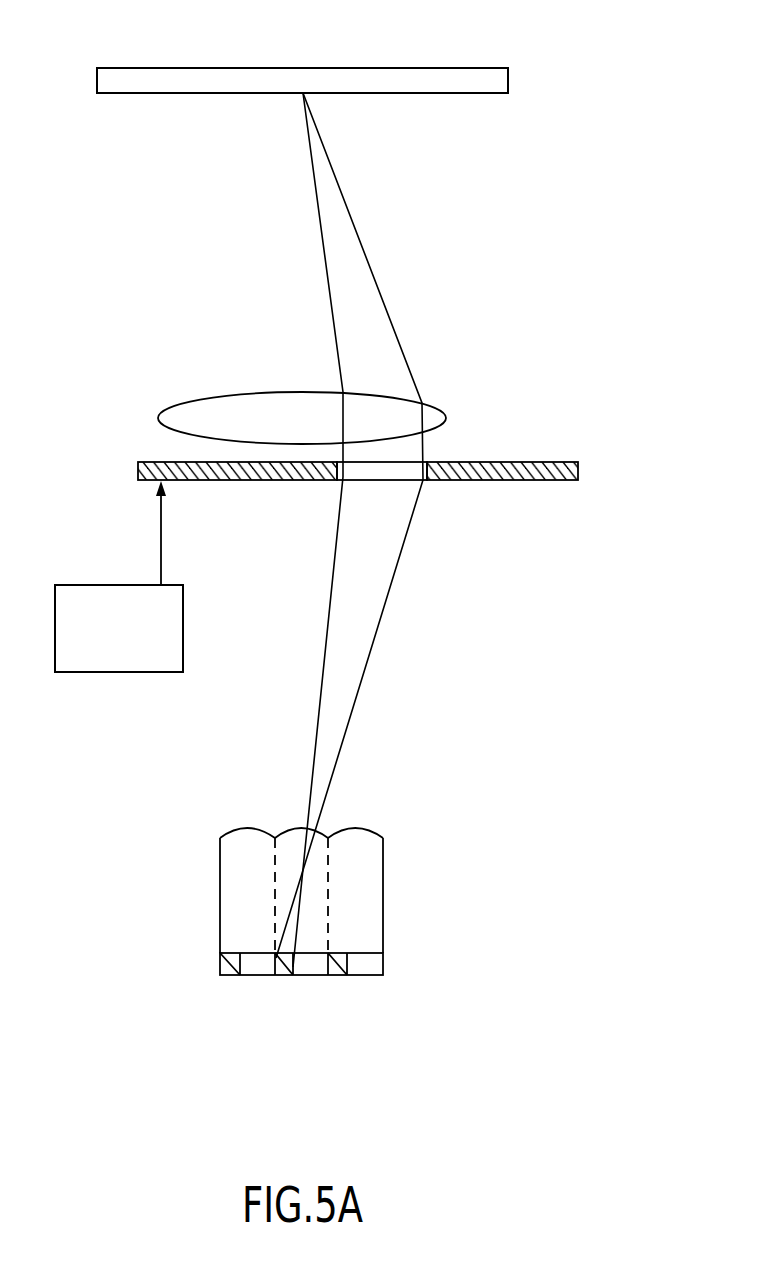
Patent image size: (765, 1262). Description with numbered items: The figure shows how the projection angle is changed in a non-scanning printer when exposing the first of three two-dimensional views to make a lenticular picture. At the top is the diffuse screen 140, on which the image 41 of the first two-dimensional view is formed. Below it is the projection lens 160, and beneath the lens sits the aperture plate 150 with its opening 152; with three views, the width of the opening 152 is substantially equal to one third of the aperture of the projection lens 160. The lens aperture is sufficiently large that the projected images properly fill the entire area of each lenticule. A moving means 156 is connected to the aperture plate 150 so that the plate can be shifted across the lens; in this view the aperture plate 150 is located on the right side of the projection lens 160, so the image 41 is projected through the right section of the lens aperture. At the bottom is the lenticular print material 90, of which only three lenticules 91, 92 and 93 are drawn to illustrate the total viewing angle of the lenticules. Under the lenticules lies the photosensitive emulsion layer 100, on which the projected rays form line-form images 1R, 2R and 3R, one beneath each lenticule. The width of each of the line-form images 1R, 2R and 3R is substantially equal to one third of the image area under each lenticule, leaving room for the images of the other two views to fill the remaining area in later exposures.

The diffuse screen 140 is at (320, 78).
The image of the first 2D view 41 is at (115, 95).
The projection lens 160 is at (192, 412).
The aperture plate 150 is at (557, 462).
The opening 152 is at (398, 473).
The moving means 156 is at (150, 660).
The lenticular print material 90 is at (304, 865).
The lenticule 91 is at (256, 832).
The lenticule 92 is at (318, 833).
The lenticule 93 is at (368, 838).
The photosensitive emulsion layer 100 is at (336, 996).
The line-form image 1R is at (230, 977).
The line-form image 2R is at (285, 977).
The line-form image 3R is at (337, 977).